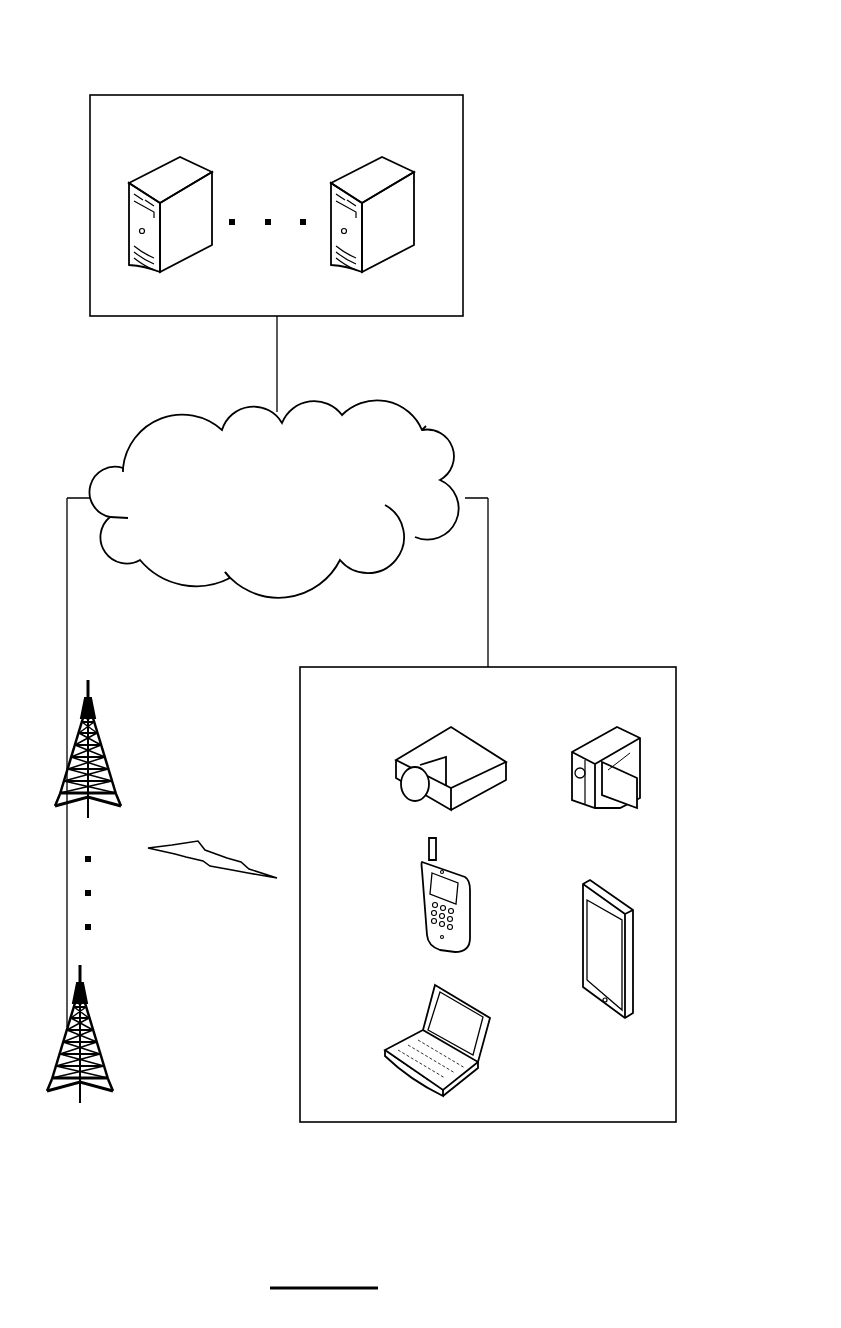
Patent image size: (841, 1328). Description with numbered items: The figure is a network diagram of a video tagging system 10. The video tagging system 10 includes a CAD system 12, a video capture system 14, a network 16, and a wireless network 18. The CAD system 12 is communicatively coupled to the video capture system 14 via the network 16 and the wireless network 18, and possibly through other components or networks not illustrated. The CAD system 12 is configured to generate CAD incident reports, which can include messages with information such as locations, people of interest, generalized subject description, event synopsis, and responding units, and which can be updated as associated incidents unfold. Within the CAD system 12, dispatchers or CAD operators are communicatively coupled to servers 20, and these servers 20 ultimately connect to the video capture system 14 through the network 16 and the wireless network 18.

The video tagging system 10 is at (645, 66).
The CAD system 12 is at (345, 95).
The video capture system 14 is at (590, 667).
The network 16 is at (440, 430).
The wireless network 18 is at (130, 706).
The servers 20 is at (412, 146).